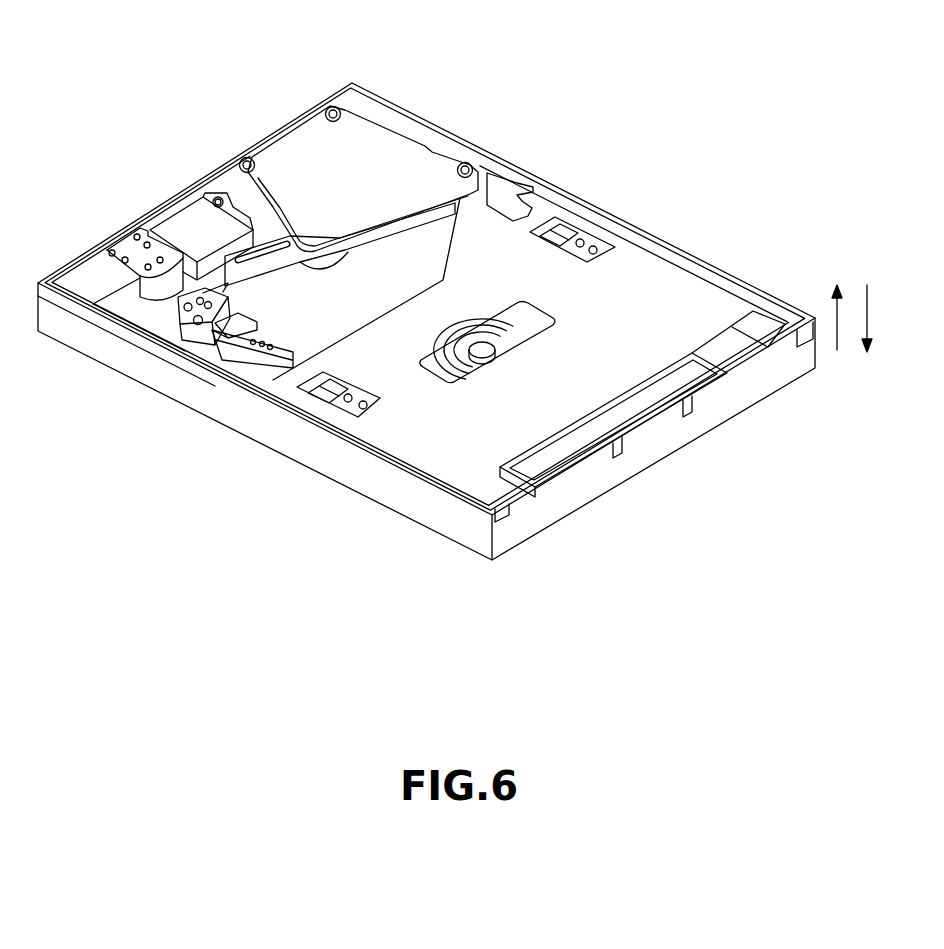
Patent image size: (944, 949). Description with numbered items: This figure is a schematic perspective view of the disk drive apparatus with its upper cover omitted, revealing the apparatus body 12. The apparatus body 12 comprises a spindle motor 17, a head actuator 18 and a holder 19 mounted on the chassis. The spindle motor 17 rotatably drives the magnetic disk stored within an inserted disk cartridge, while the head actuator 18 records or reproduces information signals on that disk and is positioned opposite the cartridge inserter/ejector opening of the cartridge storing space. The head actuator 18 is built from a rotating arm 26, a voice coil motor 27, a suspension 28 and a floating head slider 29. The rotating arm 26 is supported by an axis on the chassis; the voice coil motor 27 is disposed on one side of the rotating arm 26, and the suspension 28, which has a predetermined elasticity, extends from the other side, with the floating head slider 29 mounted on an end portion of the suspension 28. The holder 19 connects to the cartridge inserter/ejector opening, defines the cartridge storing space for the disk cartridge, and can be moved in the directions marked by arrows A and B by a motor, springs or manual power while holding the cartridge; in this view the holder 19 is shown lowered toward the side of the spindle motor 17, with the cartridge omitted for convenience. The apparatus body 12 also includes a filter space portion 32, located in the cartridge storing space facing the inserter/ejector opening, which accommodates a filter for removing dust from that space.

The apparatus body 12 is at (579, 36).
The spindle motor 17 is at (441, 389).
The head actuator 18 is at (189, 234).
The holder 19 is at (658, 278).
The rotating arm 26 is at (247, 255).
The voice coil motor 27 is at (395, 157).
The suspension 28 is at (208, 352).
The floating head slider 29 is at (278, 380).
The filter space portion 32 is at (643, 405).